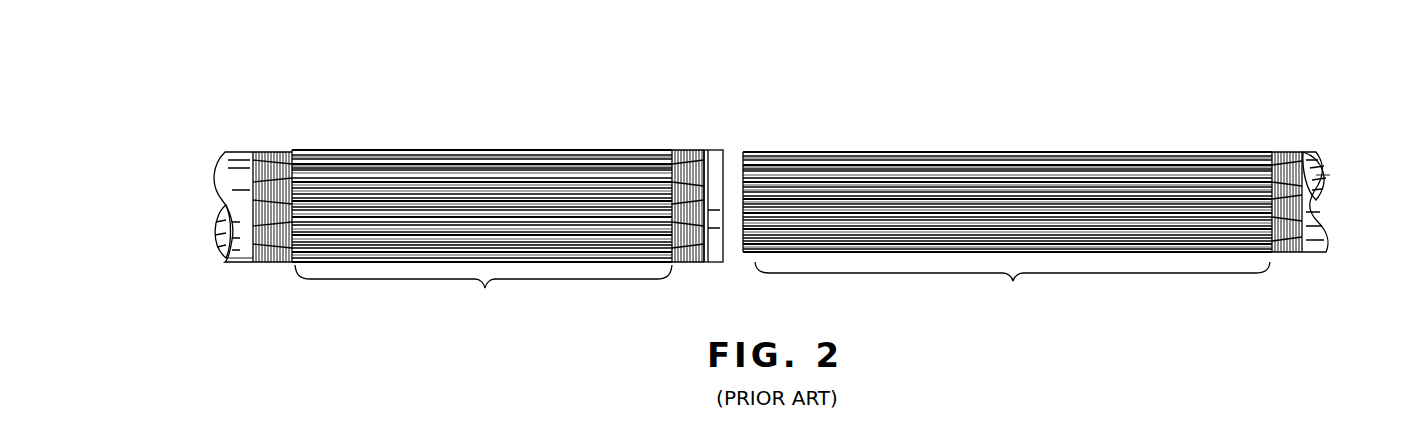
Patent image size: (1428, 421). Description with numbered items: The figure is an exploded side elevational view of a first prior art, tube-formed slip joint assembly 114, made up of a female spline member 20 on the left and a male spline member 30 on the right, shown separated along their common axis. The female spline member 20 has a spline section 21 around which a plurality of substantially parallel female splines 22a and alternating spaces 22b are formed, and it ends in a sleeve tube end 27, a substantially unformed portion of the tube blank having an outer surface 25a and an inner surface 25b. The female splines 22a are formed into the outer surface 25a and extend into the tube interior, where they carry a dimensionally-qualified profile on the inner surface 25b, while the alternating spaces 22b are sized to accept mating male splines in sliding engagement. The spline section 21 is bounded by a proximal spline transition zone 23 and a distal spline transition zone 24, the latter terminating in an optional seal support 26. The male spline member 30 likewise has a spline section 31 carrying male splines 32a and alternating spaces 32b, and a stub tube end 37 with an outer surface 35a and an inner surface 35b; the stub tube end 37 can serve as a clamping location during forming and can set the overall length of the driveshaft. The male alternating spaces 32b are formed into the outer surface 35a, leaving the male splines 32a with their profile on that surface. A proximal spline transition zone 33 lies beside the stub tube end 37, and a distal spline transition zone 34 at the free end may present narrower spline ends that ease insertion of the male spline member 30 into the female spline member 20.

The first prior art slip joint assembly 114 is at (814, 74).
The female spline member 20 is at (446, 203).
The spline section 21 is at (483, 290).
The female splines 22a is at (432, 200).
The alternating spaces 22b is at (535, 190).
The proximal spline transition zone 23 is at (273, 150).
The distal spline transition zone 24 is at (686, 150).
The outer surface 25a is at (238, 255).
The inner surface 25b is at (213, 233).
The seal support 26 is at (712, 150).
The sleeve tube end 27 is at (207, 211).
The male spline member 30 is at (1032, 194).
The spline section 31 is at (1012, 286).
The male splines 32a is at (972, 162).
The alternating spaces 32b is at (868, 172).
The proximal spline transition zone 33 is at (1282, 150).
The distal spline transition zone 34 is at (745, 262).
The outer surface 35a is at (1305, 160).
The inner surface 35b is at (1330, 172).
The stub tube end 37 is at (1346, 193).